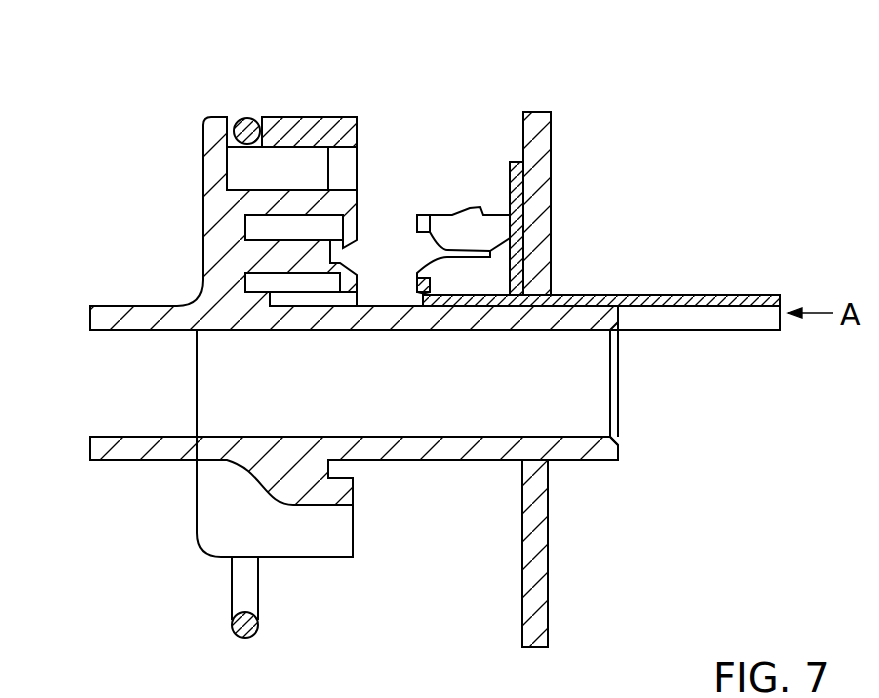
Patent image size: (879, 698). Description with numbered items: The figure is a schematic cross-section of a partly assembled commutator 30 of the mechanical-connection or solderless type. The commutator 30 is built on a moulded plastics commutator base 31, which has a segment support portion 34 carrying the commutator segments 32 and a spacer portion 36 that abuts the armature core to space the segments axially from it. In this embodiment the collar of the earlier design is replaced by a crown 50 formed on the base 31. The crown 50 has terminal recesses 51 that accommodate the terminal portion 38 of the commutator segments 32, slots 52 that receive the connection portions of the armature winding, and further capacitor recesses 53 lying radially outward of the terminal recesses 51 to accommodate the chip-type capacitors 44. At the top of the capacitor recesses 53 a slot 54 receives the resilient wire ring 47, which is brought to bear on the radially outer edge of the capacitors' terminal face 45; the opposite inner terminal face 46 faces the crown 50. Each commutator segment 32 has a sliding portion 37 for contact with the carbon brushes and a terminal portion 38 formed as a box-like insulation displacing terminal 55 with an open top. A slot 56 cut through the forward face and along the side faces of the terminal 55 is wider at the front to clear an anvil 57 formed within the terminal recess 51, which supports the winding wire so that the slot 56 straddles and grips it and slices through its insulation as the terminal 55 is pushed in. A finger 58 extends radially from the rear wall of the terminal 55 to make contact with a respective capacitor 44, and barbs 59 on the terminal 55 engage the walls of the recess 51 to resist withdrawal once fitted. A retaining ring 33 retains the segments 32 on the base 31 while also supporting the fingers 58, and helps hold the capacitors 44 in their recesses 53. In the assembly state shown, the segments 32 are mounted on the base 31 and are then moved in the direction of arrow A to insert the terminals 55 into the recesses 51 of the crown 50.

The commutator 30 is at (652, 98).
The commutator base 31 is at (100, 375).
The commutator segments 32 is at (743, 293).
The retaining ring 33 is at (545, 575).
The segment support portion 34 is at (592, 385).
The spacer portion 36 is at (112, 460).
The sliding portion 37 is at (663, 293).
The terminal portion 38 is at (487, 240).
The chip-type capacitors 44 is at (288, 168).
The terminal face 45 is at (233, 177).
The inner terminal face 46 is at (350, 170).
The wire ring 47 is at (247, 120).
The crown 50 is at (297, 545).
The terminal recesses 51 is at (262, 258).
The slots 52 is at (300, 248).
The capacitor recesses 53 is at (205, 120).
The slot 54 is at (232, 118).
The terminal 55 is at (493, 272).
The slot 56 is at (460, 257).
The anvil 57 is at (263, 227).
The finger 58 is at (508, 163).
The barbs 59 is at (473, 207).